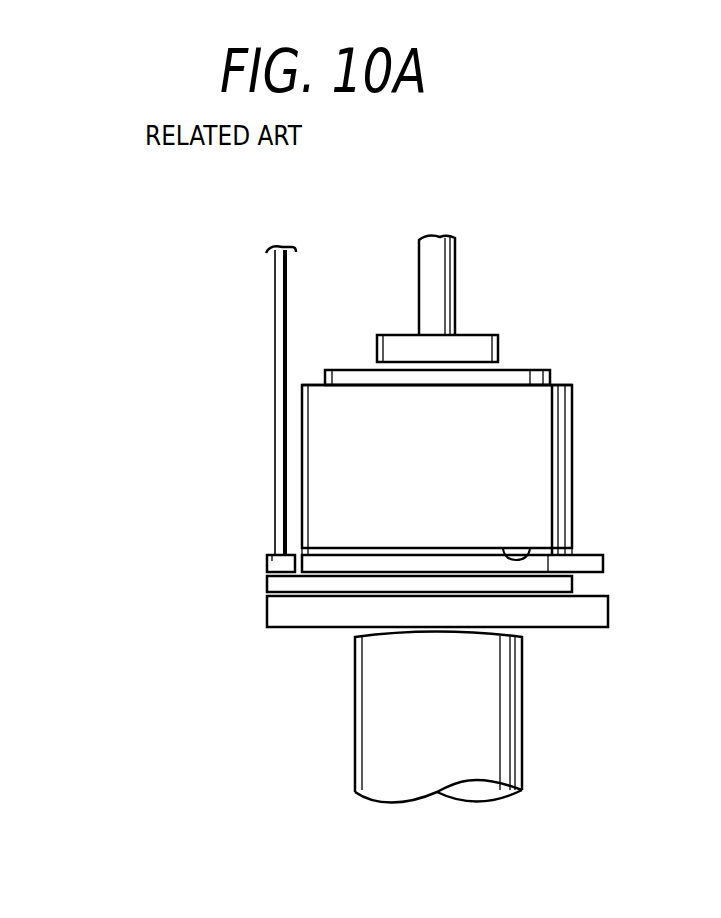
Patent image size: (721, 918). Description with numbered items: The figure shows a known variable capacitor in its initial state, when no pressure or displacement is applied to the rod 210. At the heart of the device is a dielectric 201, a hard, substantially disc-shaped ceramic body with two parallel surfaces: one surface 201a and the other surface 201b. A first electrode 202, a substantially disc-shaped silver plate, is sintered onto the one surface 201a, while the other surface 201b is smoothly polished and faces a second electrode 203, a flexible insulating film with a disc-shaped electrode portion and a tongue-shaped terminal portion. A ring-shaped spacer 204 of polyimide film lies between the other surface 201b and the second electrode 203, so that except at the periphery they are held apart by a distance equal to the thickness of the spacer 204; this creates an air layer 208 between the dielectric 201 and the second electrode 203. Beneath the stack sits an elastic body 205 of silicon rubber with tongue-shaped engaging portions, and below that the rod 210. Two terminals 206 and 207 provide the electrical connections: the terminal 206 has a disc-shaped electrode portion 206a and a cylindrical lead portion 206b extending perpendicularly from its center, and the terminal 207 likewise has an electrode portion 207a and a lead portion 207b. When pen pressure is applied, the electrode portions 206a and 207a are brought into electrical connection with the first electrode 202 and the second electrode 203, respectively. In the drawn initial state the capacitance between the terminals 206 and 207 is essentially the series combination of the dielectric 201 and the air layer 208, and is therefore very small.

The dielectric 201 is at (572, 430).
The one surface 201a is at (568, 384).
The other surface 201b is at (533, 550).
The first electrode 202 is at (527, 367).
The second electrode 203 is at (273, 585).
The spacer 204 is at (602, 560).
The elastic body 205 is at (310, 618).
The terminal 206 is at (562, 213).
The electrode portion 206a is at (473, 350).
The lead portion 206b is at (432, 280).
The terminal 207 is at (175, 365).
The electrode portion 207a is at (268, 557).
The lead portion 207b is at (275, 397).
The air layer 208 is at (495, 560).
The rod 210 is at (523, 737).